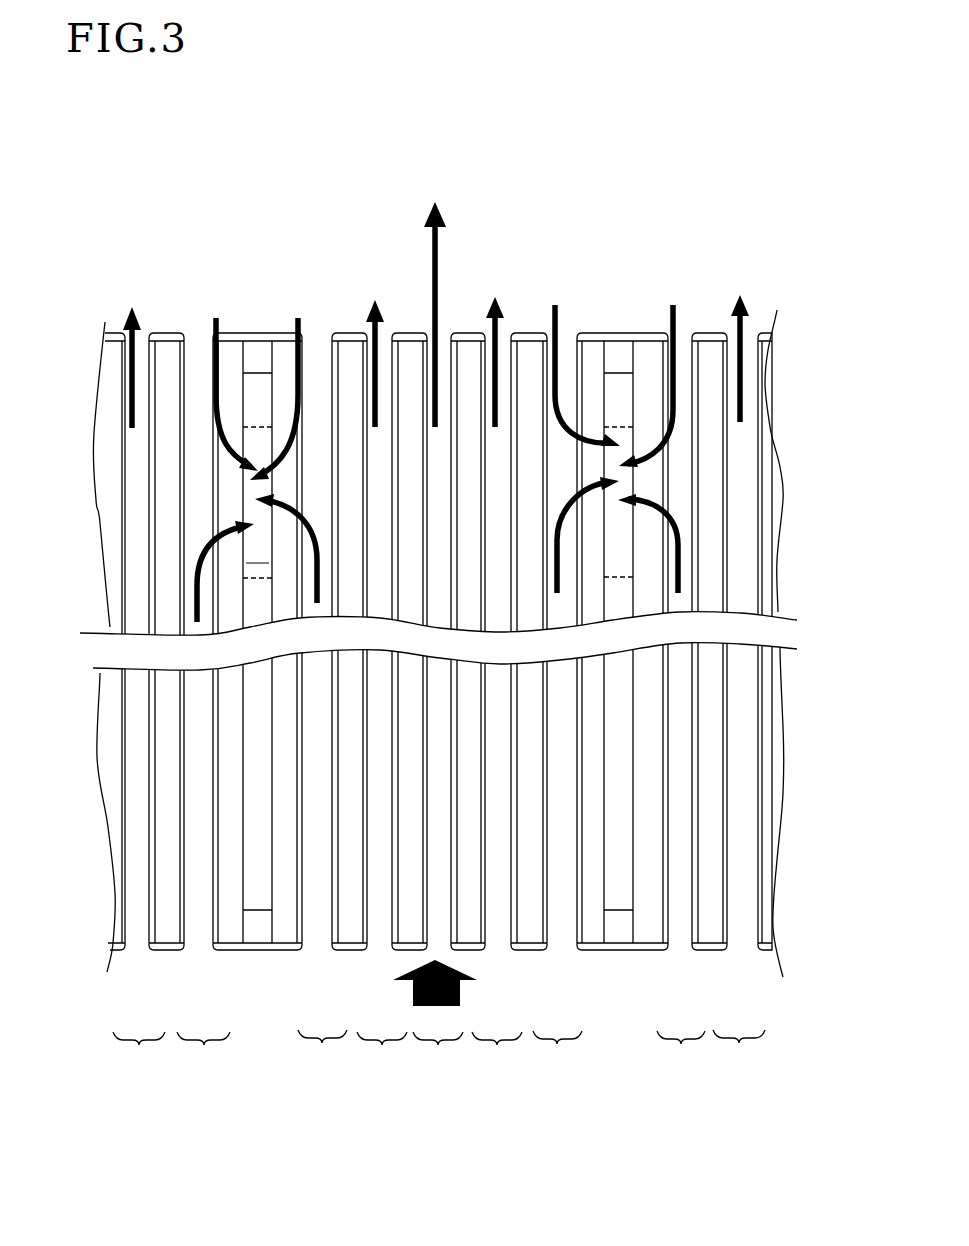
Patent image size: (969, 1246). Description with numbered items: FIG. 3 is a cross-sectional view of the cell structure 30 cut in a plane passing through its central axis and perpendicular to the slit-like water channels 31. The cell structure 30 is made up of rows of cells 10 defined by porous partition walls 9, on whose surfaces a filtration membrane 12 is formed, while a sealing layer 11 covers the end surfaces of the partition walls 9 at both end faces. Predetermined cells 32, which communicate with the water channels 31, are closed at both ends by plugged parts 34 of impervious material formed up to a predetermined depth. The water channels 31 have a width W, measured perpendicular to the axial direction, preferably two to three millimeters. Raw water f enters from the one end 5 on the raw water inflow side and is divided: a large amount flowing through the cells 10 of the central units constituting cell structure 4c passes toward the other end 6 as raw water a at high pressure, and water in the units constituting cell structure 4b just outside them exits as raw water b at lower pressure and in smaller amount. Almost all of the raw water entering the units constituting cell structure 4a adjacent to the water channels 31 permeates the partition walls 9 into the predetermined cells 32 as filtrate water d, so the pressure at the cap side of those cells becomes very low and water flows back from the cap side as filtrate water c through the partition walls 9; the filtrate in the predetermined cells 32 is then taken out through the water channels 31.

The cell structure 30 is at (793, 300).
The cells 10 is at (195, 823).
The partition walls 9 is at (160, 340).
The filtration membrane 12 is at (338, 343).
The sealing layer 11 is at (468, 332).
The predetermined cells 32 is at (232, 382).
The plugged parts 34 is at (270, 343).
The slit-like water channels 31 is at (240, 510).
The other end 6 is at (766, 318).
The one end 5 is at (716, 955).
The width of the slit-like water channels W is at (250, 628).
The raw water a is at (440, 250).
The raw water b is at (128, 302).
The raw water c is at (190, 318).
The raw water d is at (283, 505).
The raw water f is at (460, 990).
The units constituting cell structure 4a is at (441, 1056).
The units constituting cell structure 4b is at (439, 1056).
The units constituting cell structure 4c is at (438, 1057).